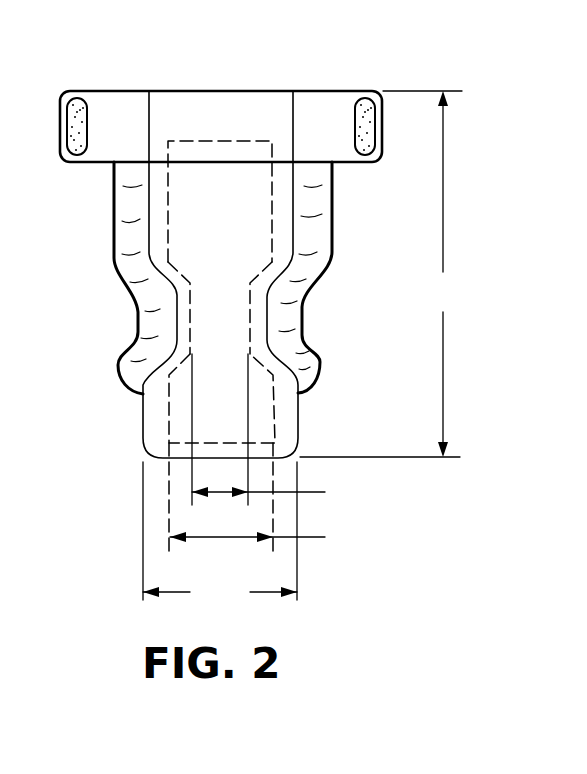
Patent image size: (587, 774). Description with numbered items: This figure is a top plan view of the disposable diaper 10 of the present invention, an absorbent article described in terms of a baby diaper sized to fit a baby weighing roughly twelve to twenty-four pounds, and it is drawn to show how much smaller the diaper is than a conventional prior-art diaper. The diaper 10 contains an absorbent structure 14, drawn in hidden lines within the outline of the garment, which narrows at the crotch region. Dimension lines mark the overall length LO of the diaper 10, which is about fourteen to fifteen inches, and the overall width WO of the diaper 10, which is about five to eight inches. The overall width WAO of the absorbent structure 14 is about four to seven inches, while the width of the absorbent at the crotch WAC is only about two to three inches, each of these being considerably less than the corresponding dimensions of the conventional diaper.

The disposable diaper 10 is at (288, 230).
The absorbent structure 14 is at (268, 367).
The overall length LO is at (382, 274).
The width of the absorbent at the crotch WAC is at (283, 434).
The overall width of absorbent structure WAO is at (273, 501).
The overall width WO is at (220, 537).